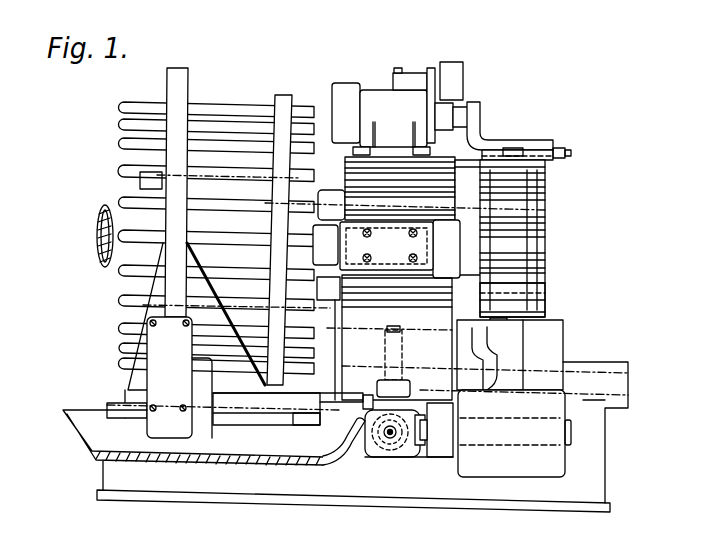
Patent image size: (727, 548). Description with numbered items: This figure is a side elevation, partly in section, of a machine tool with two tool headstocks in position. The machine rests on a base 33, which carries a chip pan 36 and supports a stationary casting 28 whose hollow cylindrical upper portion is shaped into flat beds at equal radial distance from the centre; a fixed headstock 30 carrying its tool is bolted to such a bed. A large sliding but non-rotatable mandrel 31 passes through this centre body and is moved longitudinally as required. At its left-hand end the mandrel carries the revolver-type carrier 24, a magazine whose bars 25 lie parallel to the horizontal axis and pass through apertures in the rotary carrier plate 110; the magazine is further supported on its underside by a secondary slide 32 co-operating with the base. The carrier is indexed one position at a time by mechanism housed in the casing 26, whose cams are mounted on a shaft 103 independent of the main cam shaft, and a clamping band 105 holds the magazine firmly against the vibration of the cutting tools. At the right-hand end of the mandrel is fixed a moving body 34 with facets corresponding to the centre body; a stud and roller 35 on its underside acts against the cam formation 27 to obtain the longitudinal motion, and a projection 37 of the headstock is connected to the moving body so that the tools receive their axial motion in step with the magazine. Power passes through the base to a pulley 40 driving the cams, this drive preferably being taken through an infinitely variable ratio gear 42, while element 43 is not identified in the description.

The carrier 24 is at (107, 205).
The bars 25 is at (148, 113).
The casing 26 is at (168, 382).
The cam formation 27 is at (500, 352).
The casting 28 is at (500, 297).
The headstock 30 is at (377, 107).
The mandrel 31 is at (293, 207).
The secondary slide 32 is at (253, 413).
The base 33 is at (333, 422).
The moving body 34 is at (535, 263).
The stud and roller 35 is at (512, 322).
The chip pan 36 is at (92, 427).
The projection 37 is at (509, 150).
The pulley 40 is at (440, 445).
The infinitely variable ratio gear 42 is at (552, 463).
The cover plate 43 is at (422, 252).
The shaft 103 is at (343, 425).
The clamping band 105 is at (182, 78).
The rotary carrier plate 110 is at (280, 95).